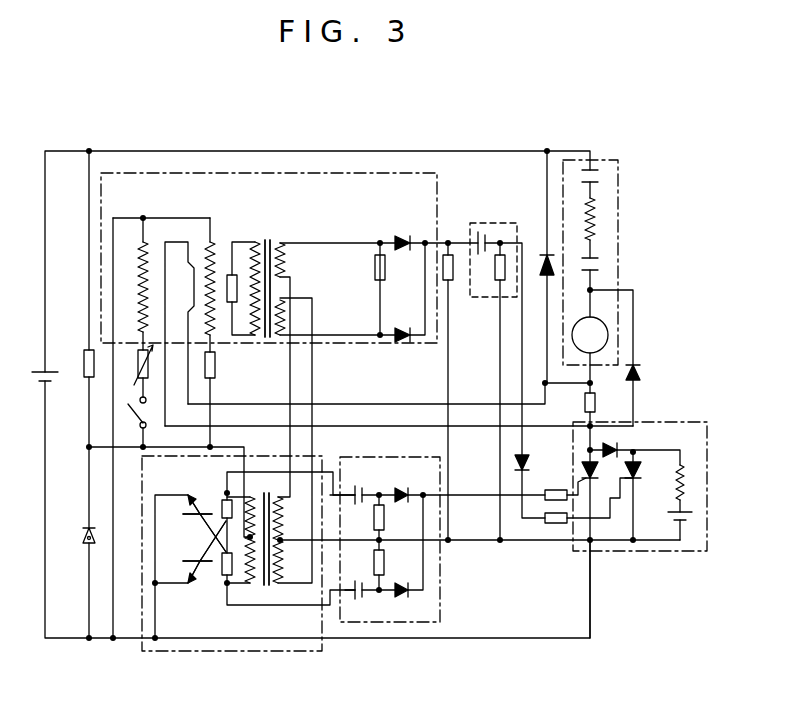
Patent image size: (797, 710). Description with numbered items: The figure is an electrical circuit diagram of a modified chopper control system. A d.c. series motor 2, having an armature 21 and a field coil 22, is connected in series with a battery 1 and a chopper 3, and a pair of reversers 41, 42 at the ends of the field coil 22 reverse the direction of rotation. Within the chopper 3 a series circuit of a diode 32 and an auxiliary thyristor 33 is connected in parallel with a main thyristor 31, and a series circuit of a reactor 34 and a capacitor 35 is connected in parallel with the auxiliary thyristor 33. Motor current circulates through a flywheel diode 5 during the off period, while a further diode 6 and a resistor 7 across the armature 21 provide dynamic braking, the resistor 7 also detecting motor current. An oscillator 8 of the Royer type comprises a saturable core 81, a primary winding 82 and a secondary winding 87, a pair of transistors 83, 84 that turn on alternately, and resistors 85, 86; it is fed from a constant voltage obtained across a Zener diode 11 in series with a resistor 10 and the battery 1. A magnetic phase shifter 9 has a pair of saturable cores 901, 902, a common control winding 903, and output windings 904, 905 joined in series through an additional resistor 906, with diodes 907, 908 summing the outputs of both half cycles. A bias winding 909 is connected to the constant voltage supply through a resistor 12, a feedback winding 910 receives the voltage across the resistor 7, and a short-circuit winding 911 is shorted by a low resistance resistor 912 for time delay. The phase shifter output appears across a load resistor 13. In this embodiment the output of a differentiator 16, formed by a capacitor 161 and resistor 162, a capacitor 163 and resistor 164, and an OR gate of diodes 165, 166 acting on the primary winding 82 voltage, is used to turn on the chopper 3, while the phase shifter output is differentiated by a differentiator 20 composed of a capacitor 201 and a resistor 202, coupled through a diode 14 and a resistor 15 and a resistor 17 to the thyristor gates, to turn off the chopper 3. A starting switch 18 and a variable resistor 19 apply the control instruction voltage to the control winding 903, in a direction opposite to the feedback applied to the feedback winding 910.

The battery 1 is at (32, 376).
The d.c. series motor 2 is at (618, 286).
The chopper 3 is at (605, 551).
The flywheel diode 5 is at (540, 272).
The diode 6 is at (641, 374).
The resistor 7 is at (596, 401).
The oscillator 8 is at (215, 651).
The magnetic phase shifter 9 is at (405, 173).
The resistor 10 is at (84, 355).
The Zener diode 11 is at (84, 530).
The resistor 12 is at (216, 376).
The load resistor 13 is at (449, 281).
The diode 14 is at (524, 456).
The resistor 15 is at (550, 490).
The differentiator 16 is at (440, 582).
The resistor 17 is at (552, 524).
The starting switch 18 is at (138, 410).
The variable resistor 19 is at (133, 364).
The differentiator 20 is at (484, 300).
The armature 21 is at (578, 318).
The field coil 22 is at (598, 228).
The main thyristor 31 is at (580, 470).
The diode 32 is at (618, 442).
The auxiliary thyristor 33 is at (641, 472).
The reactor 34 is at (682, 464).
The capacitor 35 is at (690, 540).
The reverser 41 is at (600, 176).
The reverser 42 is at (600, 266).
The saturable core 81 is at (268, 588).
The primary winding 82 is at (246, 585).
The transistor 83 is at (192, 505).
The transistor 84 is at (190, 570).
The resistor 85 is at (222, 505).
The resistor 86 is at (222, 575).
The secondary winding 87 is at (284, 560).
The capacitor 161 is at (370, 485).
The resistor 162 is at (374, 515).
The capacitor 163 is at (358, 600).
The resistor 164 is at (374, 560).
The diode 165 is at (401, 487).
The diode 166 is at (401, 598).
The capacitor 201 is at (478, 231).
The resistor 202 is at (503, 254).
The saturable core 901 is at (275, 245).
The saturable core 902 is at (268, 337).
The control winding 903 is at (138, 240).
The output winding 904 is at (288, 258).
The output winding 905 is at (290, 318).
The additional resistor 906 is at (374, 262).
The diode 907 is at (403, 235).
The diode 908 is at (403, 342).
The bias winding 909 is at (214, 240).
The feedback winding 910 is at (190, 282).
The short-circuit winding 911 is at (252, 258).
The resistor 912 is at (232, 302).